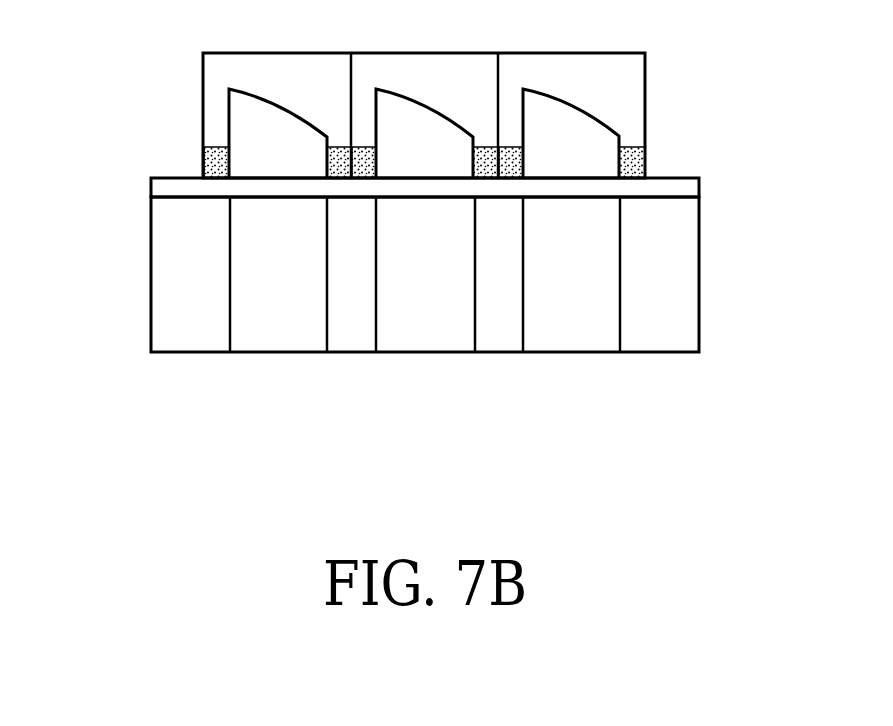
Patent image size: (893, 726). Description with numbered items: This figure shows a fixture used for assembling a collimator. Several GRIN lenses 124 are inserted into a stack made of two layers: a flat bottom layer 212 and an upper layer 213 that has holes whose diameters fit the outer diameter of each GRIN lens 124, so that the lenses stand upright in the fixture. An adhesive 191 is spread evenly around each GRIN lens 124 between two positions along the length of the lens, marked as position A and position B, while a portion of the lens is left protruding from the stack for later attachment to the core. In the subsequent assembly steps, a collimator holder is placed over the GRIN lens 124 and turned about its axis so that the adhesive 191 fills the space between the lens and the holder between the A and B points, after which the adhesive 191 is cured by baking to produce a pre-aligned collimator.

The GRIN lens 124 is at (285, 343).
The adhesive 191 is at (203, 156).
The layer 212 is at (151, 311).
The layer 213 is at (151, 189).
The position A is at (653, 148).
The position B is at (705, 180).